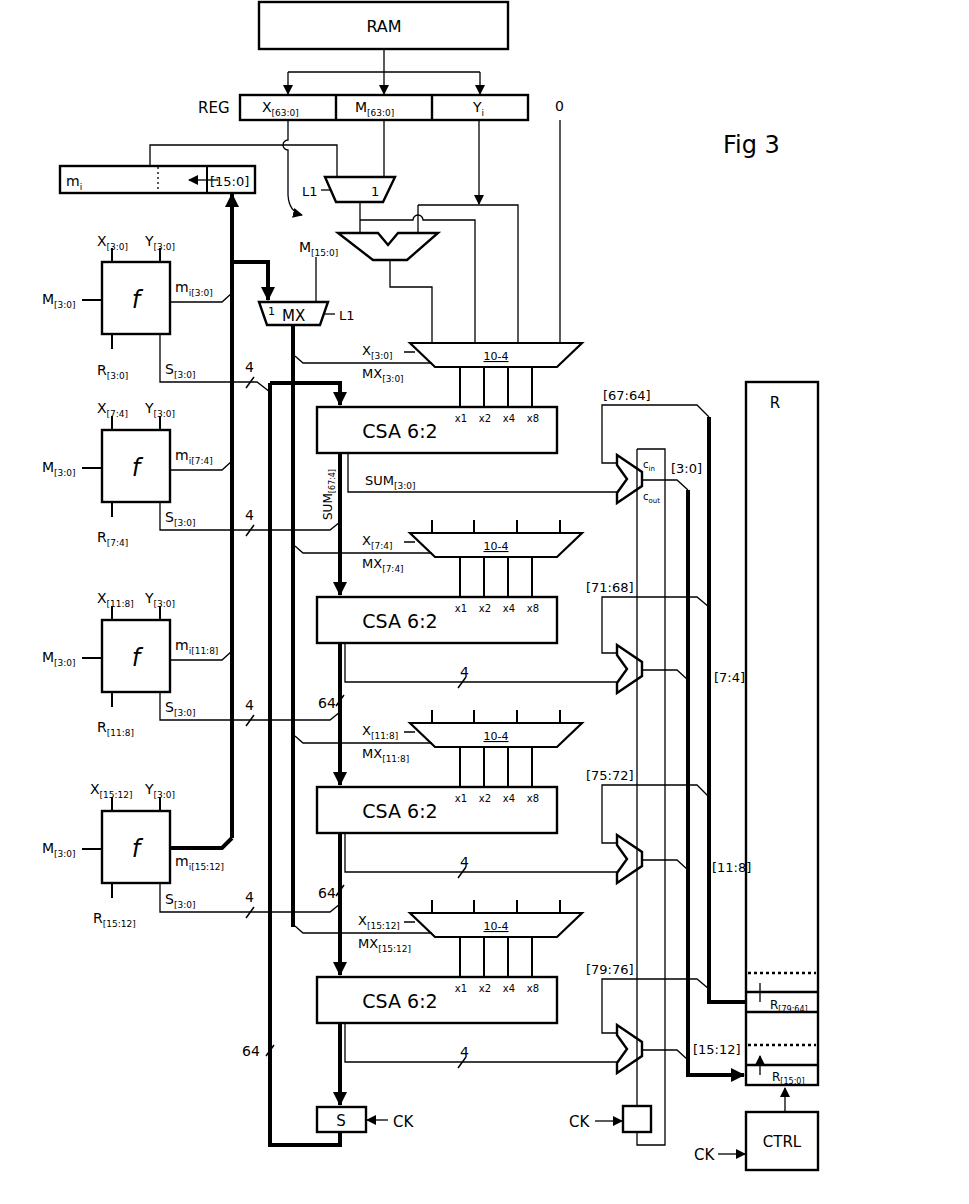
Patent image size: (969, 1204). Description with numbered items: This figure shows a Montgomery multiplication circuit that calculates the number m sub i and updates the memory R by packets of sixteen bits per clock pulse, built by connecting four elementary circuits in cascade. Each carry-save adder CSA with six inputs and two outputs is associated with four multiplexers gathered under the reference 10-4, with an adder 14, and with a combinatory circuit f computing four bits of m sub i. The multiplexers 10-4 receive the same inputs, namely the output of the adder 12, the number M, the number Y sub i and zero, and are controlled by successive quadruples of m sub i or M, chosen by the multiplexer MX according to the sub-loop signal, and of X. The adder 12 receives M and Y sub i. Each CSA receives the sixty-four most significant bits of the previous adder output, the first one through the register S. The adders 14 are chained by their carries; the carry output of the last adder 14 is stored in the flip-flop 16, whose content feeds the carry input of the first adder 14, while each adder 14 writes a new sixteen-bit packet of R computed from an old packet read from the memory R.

The adder 12 is at (404, 248).
The adder 14 is at (619, 455).
The flip-flop 16 is at (637, 1119).
The multiplexers 10-4 is at (496, 660).